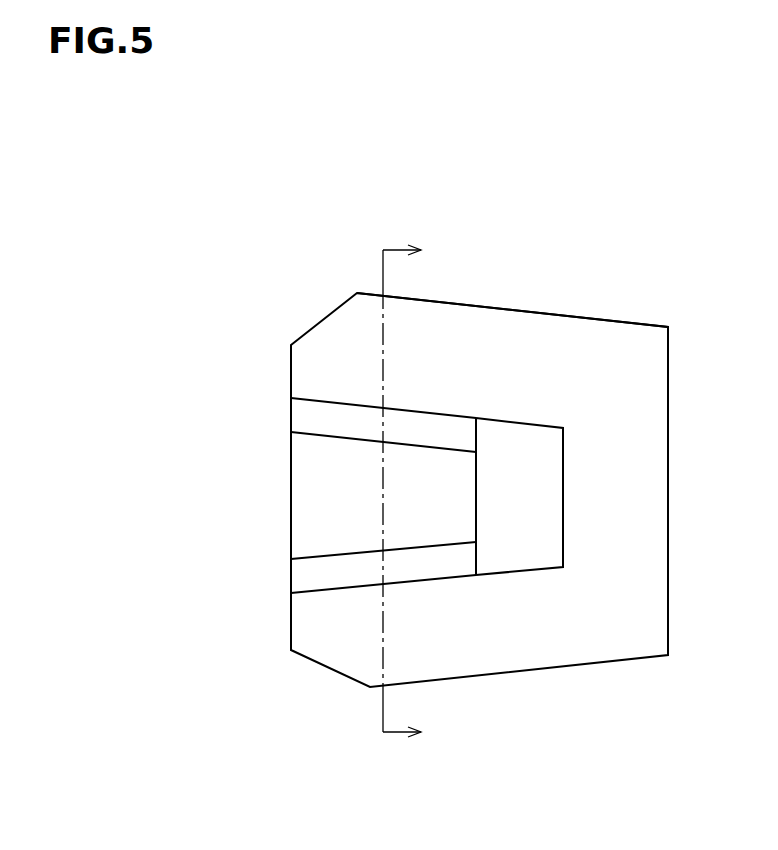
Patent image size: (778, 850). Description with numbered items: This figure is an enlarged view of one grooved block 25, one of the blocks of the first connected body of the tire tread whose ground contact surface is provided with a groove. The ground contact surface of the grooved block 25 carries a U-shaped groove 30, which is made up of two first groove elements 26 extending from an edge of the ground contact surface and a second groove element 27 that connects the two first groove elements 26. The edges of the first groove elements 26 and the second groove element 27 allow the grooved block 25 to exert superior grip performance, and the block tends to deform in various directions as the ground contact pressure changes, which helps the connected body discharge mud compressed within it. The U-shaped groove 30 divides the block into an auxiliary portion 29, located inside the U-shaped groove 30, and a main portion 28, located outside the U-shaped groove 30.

The grooved block 25 is at (304, 299).
The first groove elements 26 is at (422, 561).
The second groove element 27 is at (523, 502).
The main portion 28 is at (555, 368).
The auxiliary portion 29 is at (333, 502).
The U-shaped groove 30 is at (474, 618).